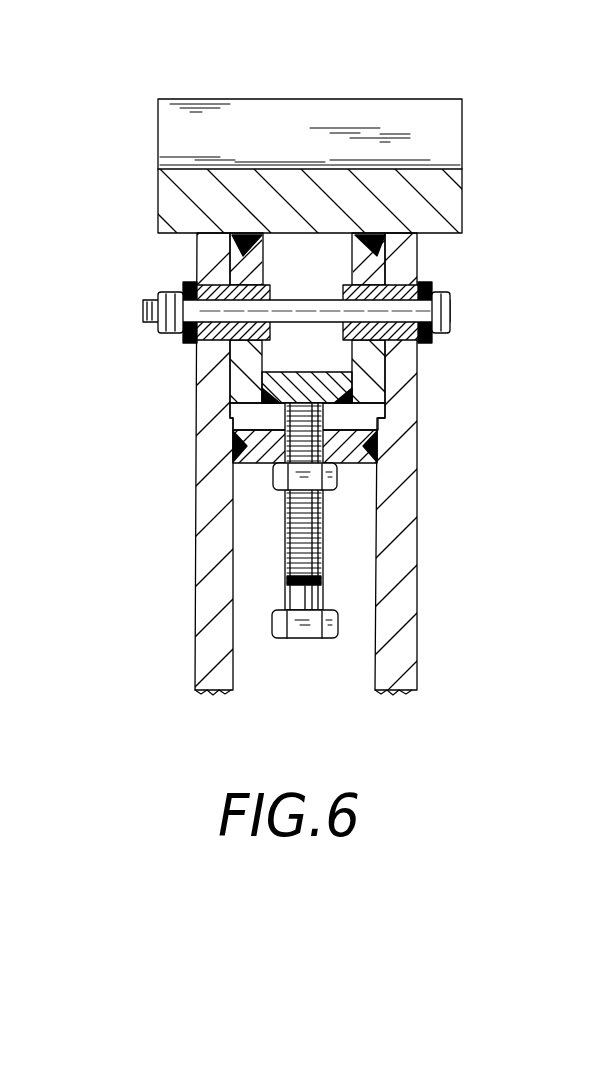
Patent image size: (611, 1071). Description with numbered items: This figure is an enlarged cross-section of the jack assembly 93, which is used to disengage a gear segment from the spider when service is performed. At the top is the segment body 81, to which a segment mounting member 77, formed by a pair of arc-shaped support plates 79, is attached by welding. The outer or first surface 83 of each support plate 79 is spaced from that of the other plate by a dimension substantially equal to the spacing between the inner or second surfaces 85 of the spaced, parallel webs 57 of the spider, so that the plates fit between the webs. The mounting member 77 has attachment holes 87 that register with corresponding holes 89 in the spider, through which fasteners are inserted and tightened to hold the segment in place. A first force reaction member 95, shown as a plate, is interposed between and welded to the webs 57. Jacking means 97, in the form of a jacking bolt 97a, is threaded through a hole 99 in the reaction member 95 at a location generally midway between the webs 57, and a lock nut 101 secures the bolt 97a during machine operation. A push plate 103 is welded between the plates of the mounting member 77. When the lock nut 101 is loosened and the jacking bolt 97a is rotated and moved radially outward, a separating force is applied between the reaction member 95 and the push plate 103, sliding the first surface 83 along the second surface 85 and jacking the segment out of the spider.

The web 57 is at (195, 593).
The segment mounting member 77 is at (442, 374).
The support plate 79 is at (250, 270).
The segment body 81 is at (450, 202).
The first surface 83 is at (380, 268).
The second surface 85 is at (263, 287).
The attachment hole 87 is at (262, 272).
The hole 89 is at (240, 347).
The jack assembly 93 is at (276, 680).
The first force reaction member 95 is at (375, 457).
The jacking means 97 is at (338, 603).
The jacking bolt 97a is at (327, 535).
The hole 99 is at (240, 455).
The lock nut 101 is at (275, 487).
The push plate 103 is at (262, 382).